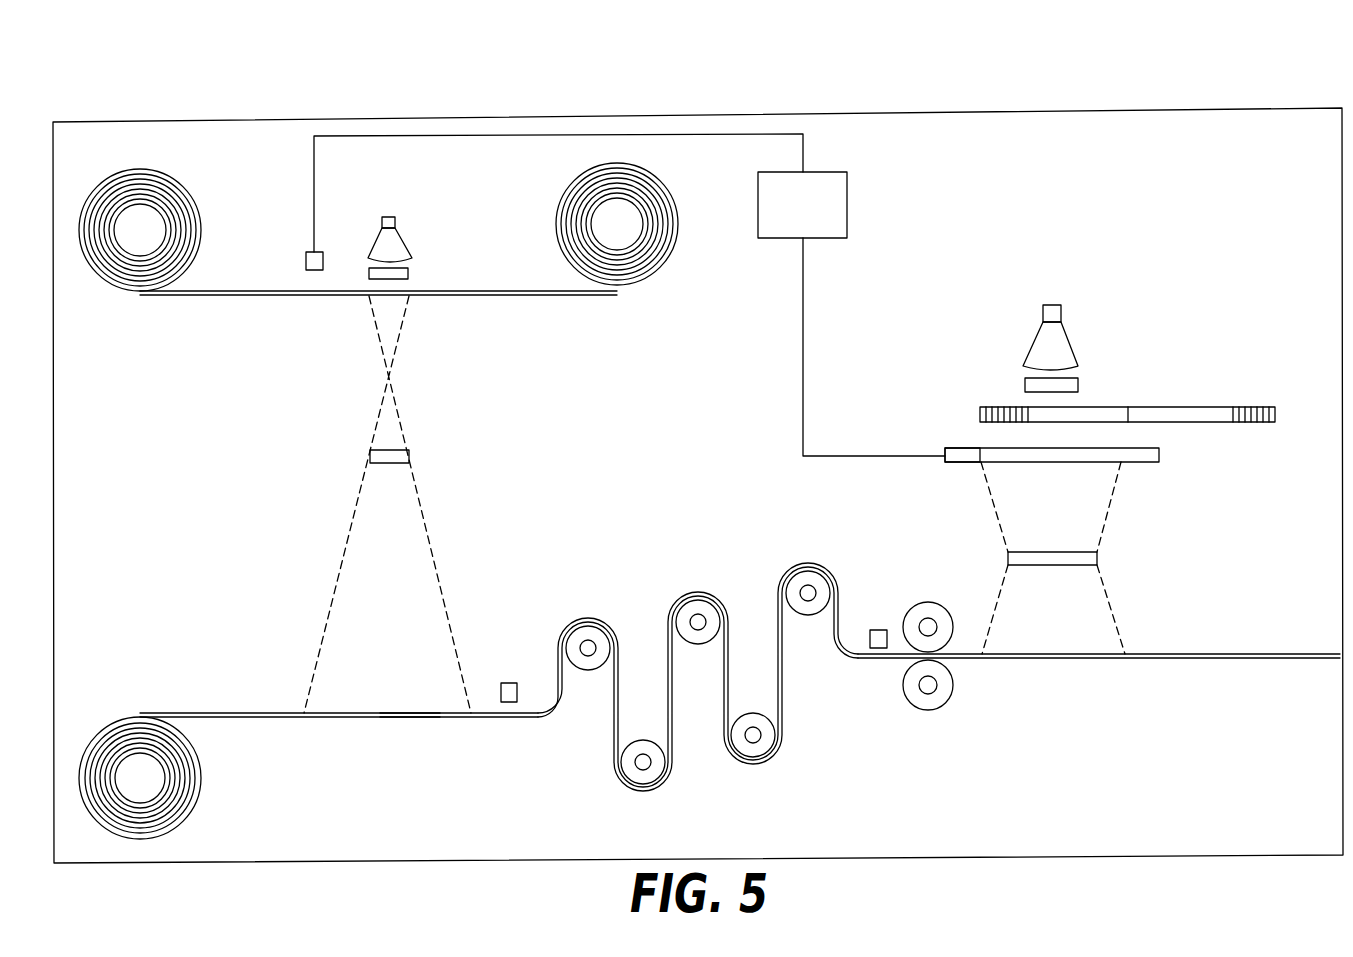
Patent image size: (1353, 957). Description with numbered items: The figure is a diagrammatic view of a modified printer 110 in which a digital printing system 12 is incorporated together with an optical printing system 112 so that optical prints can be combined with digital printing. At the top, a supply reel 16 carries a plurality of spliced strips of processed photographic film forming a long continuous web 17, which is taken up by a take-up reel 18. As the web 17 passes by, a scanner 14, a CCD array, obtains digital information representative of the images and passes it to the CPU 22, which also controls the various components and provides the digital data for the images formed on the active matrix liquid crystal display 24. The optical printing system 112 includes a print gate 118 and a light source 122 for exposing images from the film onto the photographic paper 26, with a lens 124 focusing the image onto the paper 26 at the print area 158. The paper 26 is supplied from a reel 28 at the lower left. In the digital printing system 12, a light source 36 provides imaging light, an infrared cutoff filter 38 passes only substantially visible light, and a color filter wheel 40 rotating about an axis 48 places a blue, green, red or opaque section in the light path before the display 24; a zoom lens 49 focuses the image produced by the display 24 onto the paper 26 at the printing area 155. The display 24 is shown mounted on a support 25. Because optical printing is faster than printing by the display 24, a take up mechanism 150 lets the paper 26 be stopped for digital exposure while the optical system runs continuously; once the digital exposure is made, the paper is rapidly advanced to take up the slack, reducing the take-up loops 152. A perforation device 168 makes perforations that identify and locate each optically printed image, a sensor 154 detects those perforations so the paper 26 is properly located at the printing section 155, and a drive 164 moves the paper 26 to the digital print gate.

The printer 110 is at (707, 74).
The digital printing system 12 is at (1158, 260).
The scanner 14 is at (310, 250).
The supply reel 16 is at (167, 172).
The web 17 is at (215, 290).
The take-up reel 18 is at (678, 225).
The CPU 22 is at (848, 207).
The active matrix imaging liquid crystal display 24 is at (1073, 448).
The platen drive 25 is at (962, 462).
The photographic paper 26 is at (242, 712).
The reel 28 is at (190, 816).
The light source 36 is at (1068, 337).
The infrared cutoff filter 38 is at (1027, 378).
The color filter wheel 40 is at (1214, 407).
The axis 48 is at (1128, 407).
The zoom lens 49 is at (1098, 558).
The optical printing system 112 is at (517, 403).
The print gate 118 is at (410, 272).
The light source 122 is at (398, 233).
The lens 124 is at (393, 449).
The take up mechanism 150 is at (698, 676).
The take-up loops 152 is at (662, 783).
The sensor 154 is at (878, 630).
The printing area 155 is at (1054, 641).
The print area 158 is at (403, 724).
The drive 164 is at (930, 598).
The perforation device 168 is at (508, 683).